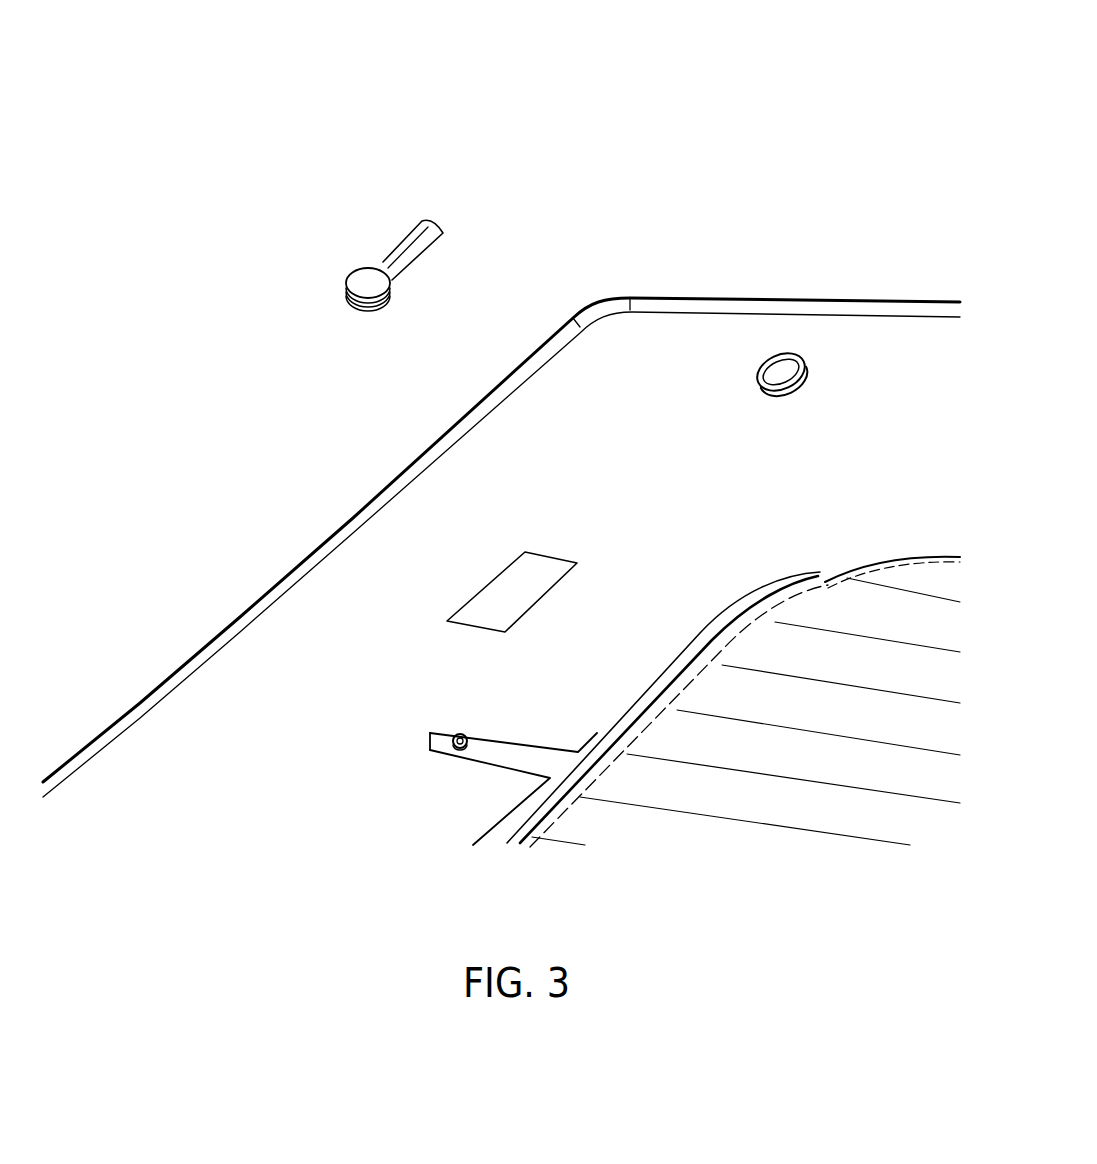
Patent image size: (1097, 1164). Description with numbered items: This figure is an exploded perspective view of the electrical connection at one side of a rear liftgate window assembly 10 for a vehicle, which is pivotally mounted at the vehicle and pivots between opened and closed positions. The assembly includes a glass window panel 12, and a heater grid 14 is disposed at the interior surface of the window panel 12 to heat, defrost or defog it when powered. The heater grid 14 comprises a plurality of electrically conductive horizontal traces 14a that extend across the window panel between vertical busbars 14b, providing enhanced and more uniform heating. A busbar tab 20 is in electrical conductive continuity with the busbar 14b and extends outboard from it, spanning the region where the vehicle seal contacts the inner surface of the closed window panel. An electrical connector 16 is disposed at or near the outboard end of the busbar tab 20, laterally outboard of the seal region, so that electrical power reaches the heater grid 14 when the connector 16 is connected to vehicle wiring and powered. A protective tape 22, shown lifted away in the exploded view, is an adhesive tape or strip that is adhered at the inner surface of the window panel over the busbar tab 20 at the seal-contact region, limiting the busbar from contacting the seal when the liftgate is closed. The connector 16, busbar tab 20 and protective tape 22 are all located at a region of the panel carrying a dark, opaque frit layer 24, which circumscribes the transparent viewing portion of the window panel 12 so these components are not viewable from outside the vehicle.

The rear liftgate window assembly 10 is at (538, 168).
The window panel 12 is at (427, 508).
The heater grid 14 is at (733, 685).
The conductive traces 14a is at (812, 785).
The busbars 14b is at (596, 741).
The electrical connector 16 is at (383, 255).
The busbar tab 20 is at (502, 752).
The protective tape 22 is at (498, 593).
The frit layer 24 is at (212, 753).